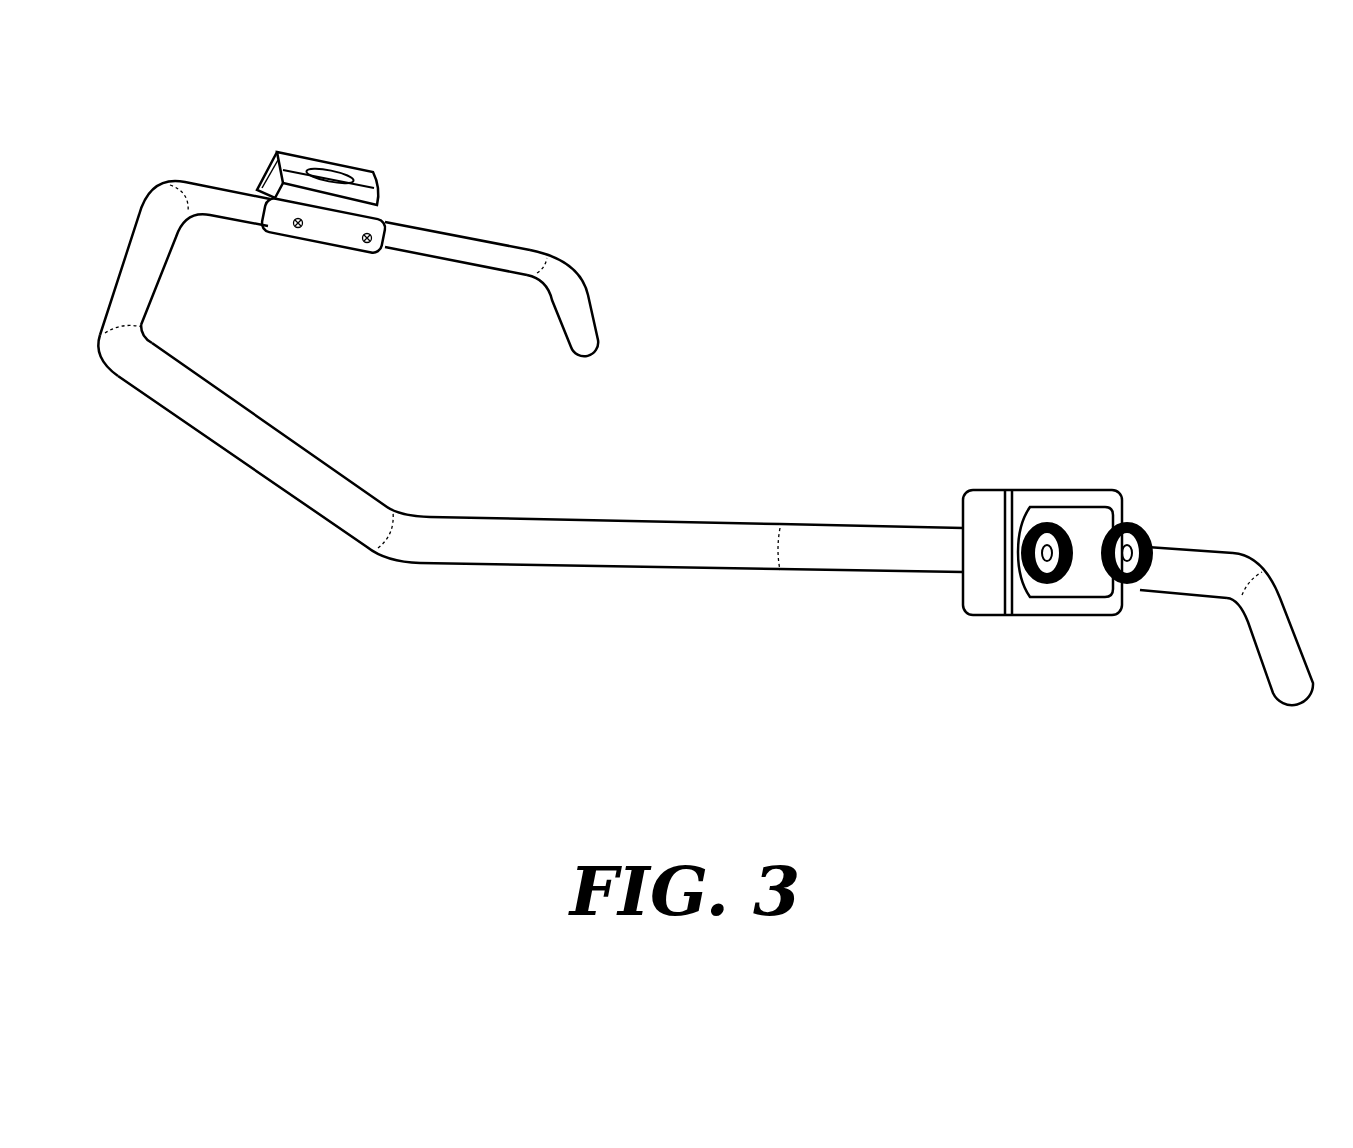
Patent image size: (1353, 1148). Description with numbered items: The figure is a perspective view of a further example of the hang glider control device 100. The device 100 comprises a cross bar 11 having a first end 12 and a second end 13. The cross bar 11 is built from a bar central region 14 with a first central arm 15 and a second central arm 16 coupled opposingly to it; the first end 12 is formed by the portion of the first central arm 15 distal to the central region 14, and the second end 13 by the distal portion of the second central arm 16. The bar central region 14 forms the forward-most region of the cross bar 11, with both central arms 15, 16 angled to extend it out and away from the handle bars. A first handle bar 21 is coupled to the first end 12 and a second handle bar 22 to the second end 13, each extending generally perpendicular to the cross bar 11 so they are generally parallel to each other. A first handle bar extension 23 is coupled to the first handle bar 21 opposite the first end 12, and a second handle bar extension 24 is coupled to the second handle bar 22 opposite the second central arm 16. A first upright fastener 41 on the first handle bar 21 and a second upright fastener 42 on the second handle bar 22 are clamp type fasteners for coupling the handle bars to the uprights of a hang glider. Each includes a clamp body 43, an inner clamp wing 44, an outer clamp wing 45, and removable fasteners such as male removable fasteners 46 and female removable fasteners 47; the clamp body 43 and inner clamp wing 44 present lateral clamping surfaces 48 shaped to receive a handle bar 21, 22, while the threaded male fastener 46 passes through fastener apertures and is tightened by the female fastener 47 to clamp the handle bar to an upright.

The hang glider control device 100 is at (828, 274).
The cross bar 11 is at (168, 550).
The first end 12 is at (137, 182).
The second end 13 is at (786, 586).
The bar central region 14 is at (233, 433).
The first central arm 15 is at (142, 270).
The second central arm 16 is at (598, 548).
The first handle bar 21 is at (240, 205).
The second handle bar 22 is at (865, 550).
The first handle bar extension 23 is at (572, 307).
The second handle bar extension 24 is at (1280, 642).
The first upright fastener 41 is at (330, 136).
The second upright fastener 42 is at (982, 640).
The clamp body 43 is at (360, 207).
The inner clamp wing 44 is at (332, 223).
The outer clamp wing 45 is at (290, 163).
The male removable fastener 46 is at (297, 232).
The female removable fastener 47 is at (1047, 543).
The lateral clamping surface 48 is at (354, 172).